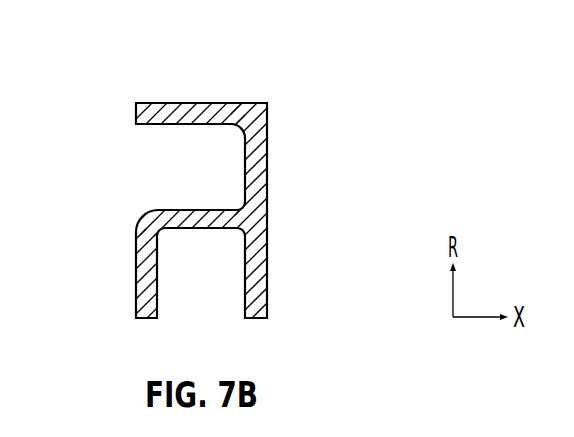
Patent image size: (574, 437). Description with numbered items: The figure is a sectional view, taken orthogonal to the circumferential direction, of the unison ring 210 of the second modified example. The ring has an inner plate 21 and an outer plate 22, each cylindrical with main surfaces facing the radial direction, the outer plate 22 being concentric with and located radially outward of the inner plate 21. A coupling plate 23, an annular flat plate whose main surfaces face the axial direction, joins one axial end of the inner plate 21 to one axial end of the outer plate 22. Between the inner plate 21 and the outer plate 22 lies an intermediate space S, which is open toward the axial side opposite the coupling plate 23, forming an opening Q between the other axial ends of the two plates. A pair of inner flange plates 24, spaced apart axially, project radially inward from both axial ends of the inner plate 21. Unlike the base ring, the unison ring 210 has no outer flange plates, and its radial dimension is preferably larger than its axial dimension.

The unison ring 210 is at (283, 98).
The outer plate 22 is at (201, 103).
The coupling plate 23 is at (267, 172).
The inner plate 21 is at (198, 230).
The inner flange plates 24 is at (137, 258).
The opening Q is at (142, 165).
The intermediate space S is at (210, 180).